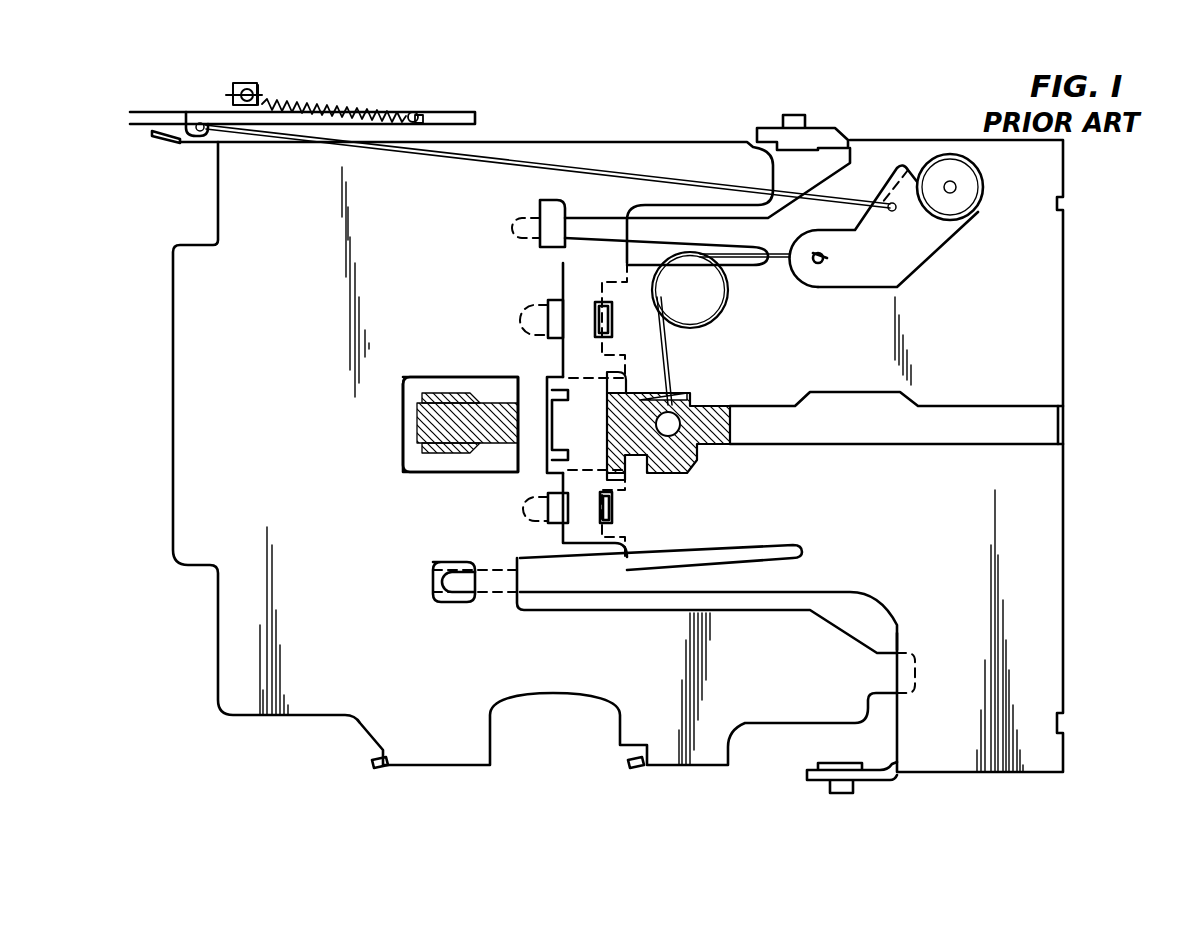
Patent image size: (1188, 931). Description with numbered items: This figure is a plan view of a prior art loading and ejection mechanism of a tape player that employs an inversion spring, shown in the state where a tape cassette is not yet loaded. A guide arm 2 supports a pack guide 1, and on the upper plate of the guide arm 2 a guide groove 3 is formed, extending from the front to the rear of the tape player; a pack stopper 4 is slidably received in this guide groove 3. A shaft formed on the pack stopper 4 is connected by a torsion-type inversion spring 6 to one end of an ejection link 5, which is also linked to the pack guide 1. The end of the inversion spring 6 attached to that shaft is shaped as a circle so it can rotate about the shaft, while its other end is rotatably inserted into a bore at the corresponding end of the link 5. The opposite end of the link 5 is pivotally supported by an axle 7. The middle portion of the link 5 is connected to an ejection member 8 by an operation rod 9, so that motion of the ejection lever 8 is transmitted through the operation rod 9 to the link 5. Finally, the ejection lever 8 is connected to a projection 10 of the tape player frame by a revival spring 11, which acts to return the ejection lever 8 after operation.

The pack guide 1 is at (313, 698).
The guide arm 2 is at (1035, 425).
The guide groove 3 is at (690, 460).
The pack stopper 4 is at (652, 435).
The ejection link 5 is at (930, 233).
The inversion spring 6 is at (677, 253).
The axle 7 is at (950, 180).
The ejection member 8 is at (450, 112).
The operation rod 9 is at (517, 158).
The projection 10 is at (233, 95).
The revival spring 11 is at (325, 107).